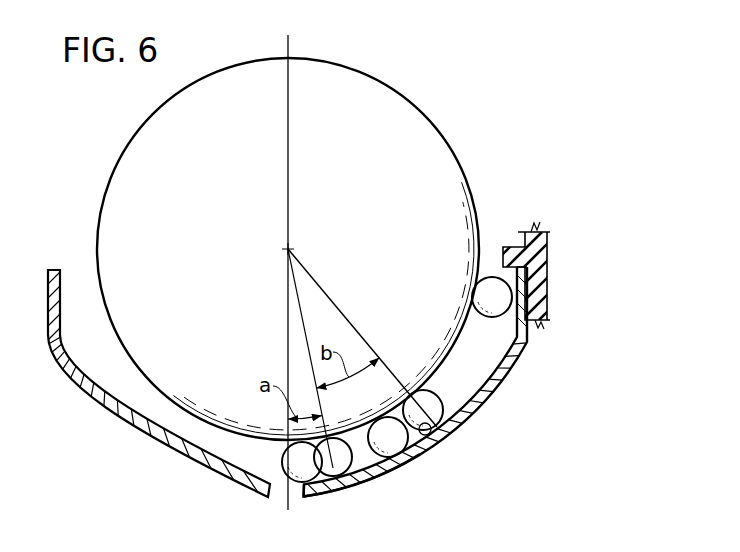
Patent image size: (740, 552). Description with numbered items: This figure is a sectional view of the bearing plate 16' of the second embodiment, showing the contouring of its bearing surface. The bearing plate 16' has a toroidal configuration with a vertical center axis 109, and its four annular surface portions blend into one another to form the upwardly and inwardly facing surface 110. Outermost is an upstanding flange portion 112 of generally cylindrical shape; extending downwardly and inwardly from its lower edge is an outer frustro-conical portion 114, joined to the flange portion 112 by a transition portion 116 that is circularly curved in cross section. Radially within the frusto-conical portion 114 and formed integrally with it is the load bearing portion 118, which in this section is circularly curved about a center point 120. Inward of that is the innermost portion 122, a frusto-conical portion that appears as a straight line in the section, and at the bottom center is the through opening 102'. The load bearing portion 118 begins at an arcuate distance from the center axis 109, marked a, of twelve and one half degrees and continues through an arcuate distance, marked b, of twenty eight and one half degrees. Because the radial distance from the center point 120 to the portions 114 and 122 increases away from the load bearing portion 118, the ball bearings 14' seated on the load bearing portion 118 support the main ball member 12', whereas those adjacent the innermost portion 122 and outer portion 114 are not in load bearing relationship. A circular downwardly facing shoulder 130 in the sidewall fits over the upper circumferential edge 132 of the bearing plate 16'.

The vertical center axis 109 is at (289, 53).
The main ball member 12' is at (294, 249).
The ball bearings 14' is at (336, 308).
The center point 120 is at (292, 248).
The center lowermost through opening 102' is at (163, 404).
The outer frustro-conical portion 114 is at (497, 385).
The transition portion 116 is at (523, 352).
The outer upstanding flange portion 112 is at (528, 327).
The upper circumferential edge 132 is at (548, 262).
The circular downwardly facing shoulder 130 is at (547, 298).
The bearing plate 16' is at (426, 436).
The upwardly and inwardly facing surface 110 is at (446, 426).
The load bearing portion 118 is at (405, 459).
The innermost portion 122 is at (323, 494).